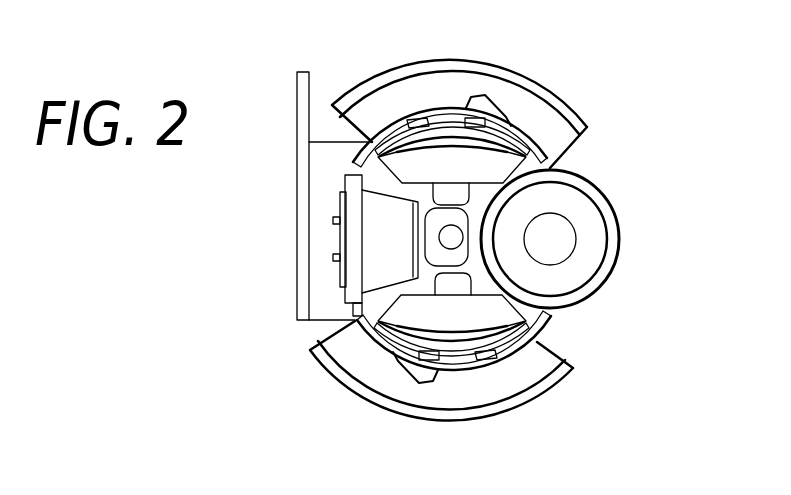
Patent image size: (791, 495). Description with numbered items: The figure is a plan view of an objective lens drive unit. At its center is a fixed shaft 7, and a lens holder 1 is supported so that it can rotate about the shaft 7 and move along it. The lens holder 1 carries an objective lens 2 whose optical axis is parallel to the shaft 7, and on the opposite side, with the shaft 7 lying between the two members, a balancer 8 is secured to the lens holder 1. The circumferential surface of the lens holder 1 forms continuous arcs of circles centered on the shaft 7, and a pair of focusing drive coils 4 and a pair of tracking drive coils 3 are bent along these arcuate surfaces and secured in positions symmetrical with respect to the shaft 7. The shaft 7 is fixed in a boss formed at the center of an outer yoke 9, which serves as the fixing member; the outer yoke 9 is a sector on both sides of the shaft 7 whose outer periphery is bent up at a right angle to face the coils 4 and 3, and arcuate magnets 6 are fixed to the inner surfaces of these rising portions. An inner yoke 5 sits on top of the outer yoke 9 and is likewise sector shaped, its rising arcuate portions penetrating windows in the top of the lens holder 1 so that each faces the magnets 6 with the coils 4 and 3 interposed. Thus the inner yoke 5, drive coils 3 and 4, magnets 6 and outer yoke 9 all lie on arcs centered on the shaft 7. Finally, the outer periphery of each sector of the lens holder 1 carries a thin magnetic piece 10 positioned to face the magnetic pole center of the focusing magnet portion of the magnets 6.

The lens holder 1 is at (612, 219).
The objective lens 2 is at (596, 261).
The tracking drive coils 3 is at (535, 148).
The focusing drive coils 4 is at (395, 135).
The inner yoke 5 is at (520, 132).
The arcuate magnets 6 is at (493, 100).
The fixed shaft 7 is at (455, 235).
The balancer 8 is at (355, 232).
The outer yoke 9 is at (456, 64).
The magnetic piece 10 is at (418, 125).